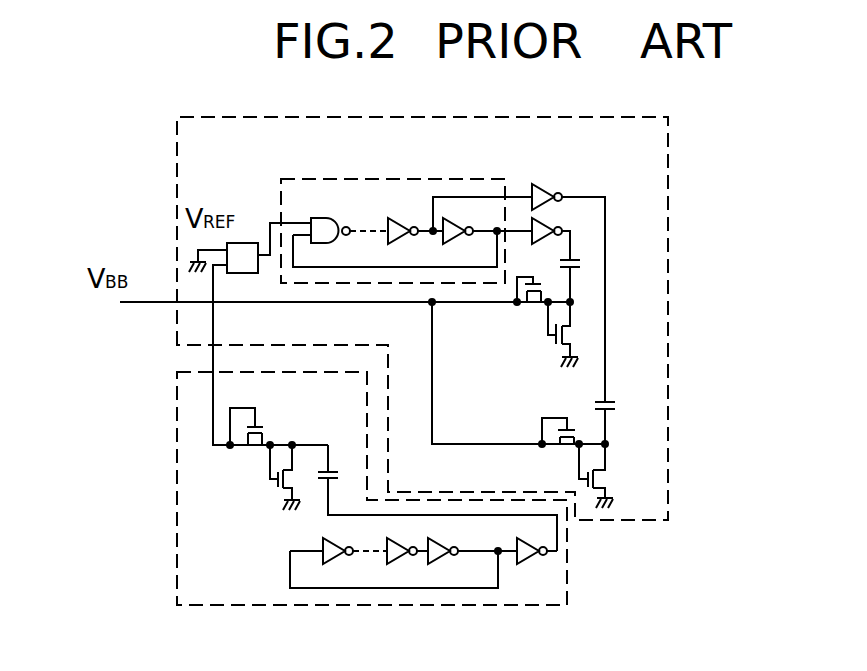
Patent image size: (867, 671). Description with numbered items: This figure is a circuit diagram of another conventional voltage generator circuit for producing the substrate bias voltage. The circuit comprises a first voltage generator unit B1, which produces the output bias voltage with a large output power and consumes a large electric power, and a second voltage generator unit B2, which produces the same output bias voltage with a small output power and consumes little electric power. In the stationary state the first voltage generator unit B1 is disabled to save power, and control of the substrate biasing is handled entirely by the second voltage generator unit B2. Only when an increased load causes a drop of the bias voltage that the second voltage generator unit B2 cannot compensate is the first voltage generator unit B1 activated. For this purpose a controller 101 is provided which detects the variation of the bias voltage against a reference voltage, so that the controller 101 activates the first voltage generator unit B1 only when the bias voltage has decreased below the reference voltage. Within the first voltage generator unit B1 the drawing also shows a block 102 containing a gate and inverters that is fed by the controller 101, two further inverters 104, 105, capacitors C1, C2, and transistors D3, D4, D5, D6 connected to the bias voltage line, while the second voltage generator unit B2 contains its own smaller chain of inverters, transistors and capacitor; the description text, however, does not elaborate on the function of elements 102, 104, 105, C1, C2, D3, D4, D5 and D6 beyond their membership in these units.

The controller 101 is at (250, 243).
The oscillator circuit (NAND gate and inverters) 102 is at (403, 178).
The inverter (driver) 104 is at (562, 227).
The inverter (driver) 105 is at (538, 189).
The charge pump capacitor C1 is at (588, 262).
The charge pump capacitor C2 is at (612, 398).
The MOS transistor (diode-connected) D3 is at (535, 305).
The MOS transistor (diode-connected) D4 is at (548, 340).
The MOS transistor (diode-connected) D5 is at (540, 430).
The MOS transistor (diode-connected) D6 is at (577, 480).
The first voltage generator unit B1 is at (670, 272).
The second voltage generator unit B2 is at (567, 595).